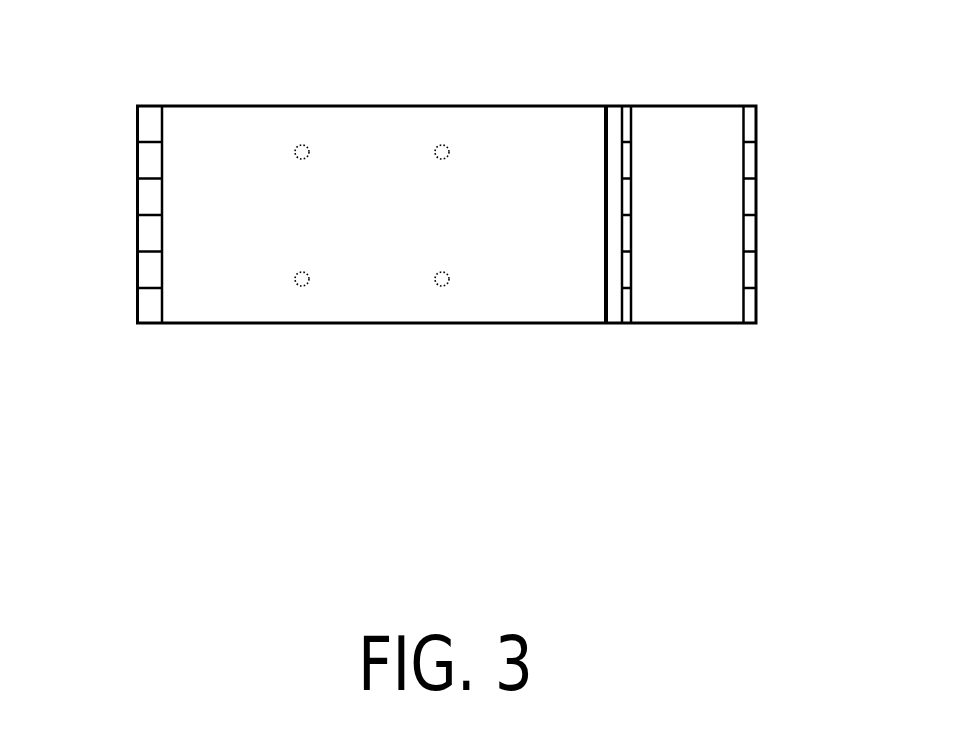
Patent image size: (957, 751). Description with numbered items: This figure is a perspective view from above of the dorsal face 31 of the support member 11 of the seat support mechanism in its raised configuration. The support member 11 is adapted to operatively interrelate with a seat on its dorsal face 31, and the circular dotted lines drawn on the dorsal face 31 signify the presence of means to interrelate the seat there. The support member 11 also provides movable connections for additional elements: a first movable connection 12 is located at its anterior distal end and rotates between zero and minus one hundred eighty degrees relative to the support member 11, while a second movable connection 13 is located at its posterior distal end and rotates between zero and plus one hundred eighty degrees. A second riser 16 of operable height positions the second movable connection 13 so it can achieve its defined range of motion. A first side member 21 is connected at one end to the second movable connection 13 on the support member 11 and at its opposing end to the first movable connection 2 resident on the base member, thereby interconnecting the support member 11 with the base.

The first movable connection 2 is at (768, 216).
The support member 11 is at (393, 300).
The first movable connection 12 is at (129, 217).
The second movable connection 13 is at (650, 257).
The second riser 16 is at (589, 257).
The first side member 21 is at (691, 134).
The dorsal face 31 is at (362, 148).